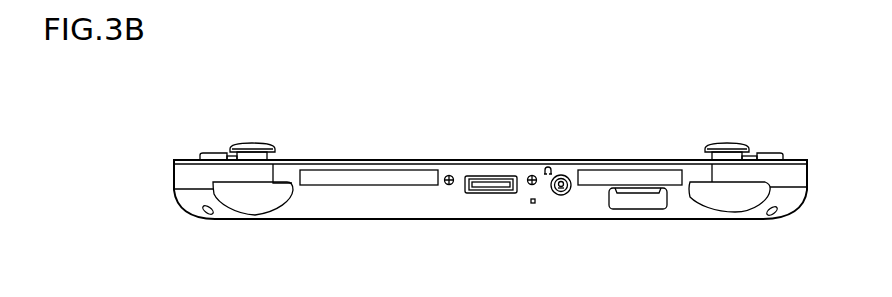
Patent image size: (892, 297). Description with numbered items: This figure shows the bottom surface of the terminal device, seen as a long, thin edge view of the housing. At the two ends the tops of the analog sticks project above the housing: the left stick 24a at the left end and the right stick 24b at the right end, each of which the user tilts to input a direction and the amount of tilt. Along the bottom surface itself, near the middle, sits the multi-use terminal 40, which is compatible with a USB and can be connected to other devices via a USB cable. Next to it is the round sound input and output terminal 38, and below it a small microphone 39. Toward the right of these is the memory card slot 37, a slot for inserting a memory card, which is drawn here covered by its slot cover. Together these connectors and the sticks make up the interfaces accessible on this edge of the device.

The left stick 24a is at (252, 143).
The right stick 24b is at (728, 143).
The multi-use terminal 40 is at (487, 176).
The sound input and output terminal 38 is at (560, 175).
The microphone 39 is at (533, 203).
The memory card slot 37 is at (638, 209).